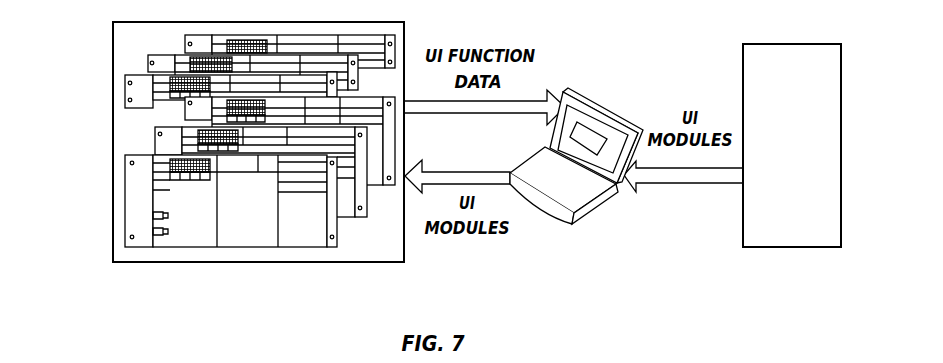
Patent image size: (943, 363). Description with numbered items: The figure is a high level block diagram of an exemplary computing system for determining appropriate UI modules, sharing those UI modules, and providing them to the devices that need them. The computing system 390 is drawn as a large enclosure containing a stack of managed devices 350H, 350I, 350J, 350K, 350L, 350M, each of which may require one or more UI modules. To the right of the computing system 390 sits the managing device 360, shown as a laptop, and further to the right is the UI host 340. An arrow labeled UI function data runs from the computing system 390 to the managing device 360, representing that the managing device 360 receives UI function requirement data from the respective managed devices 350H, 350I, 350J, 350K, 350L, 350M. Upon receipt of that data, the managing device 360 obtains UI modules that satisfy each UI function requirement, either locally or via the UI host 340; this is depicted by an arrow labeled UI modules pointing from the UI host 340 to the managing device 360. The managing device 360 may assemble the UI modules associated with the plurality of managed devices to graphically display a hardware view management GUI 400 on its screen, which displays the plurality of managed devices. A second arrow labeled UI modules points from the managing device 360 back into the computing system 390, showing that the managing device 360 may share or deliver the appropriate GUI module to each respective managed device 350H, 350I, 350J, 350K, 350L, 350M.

The UI host 340 is at (779, 166).
The managed device 350H is at (233, 247).
The managed device 350I is at (347, 210).
The managed device 350J is at (378, 178).
The managed device 350K is at (128, 92).
The managed device 350L is at (152, 62).
The managed device 350M is at (188, 42).
The managing device 360 is at (578, 212).
The computing system 390 is at (127, 262).
The hardware view management GUI 400 is at (582, 138).